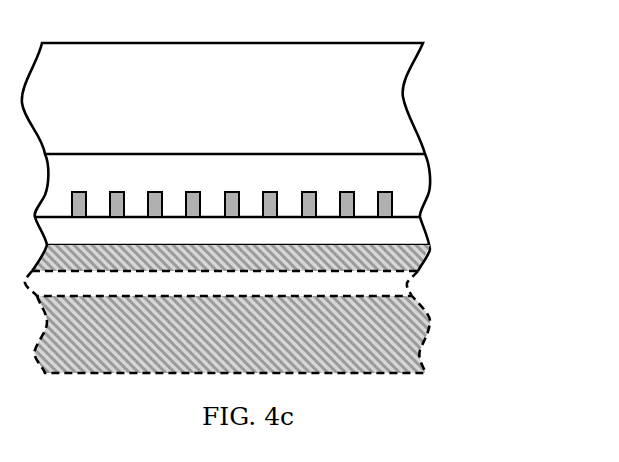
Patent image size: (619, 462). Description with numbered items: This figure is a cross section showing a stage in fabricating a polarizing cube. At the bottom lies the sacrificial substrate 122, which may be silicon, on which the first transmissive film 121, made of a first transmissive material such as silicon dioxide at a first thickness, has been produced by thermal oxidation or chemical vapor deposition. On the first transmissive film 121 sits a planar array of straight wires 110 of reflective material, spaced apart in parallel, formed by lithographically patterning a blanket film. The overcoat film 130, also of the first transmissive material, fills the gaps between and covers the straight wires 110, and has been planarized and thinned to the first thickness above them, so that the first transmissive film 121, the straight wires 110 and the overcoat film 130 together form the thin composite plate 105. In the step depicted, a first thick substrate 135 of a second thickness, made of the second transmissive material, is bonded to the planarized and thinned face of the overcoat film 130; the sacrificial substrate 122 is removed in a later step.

The first thick substrate 135 is at (387, 71).
The overcoat film 130 is at (413, 162).
The straight wires 110 is at (392, 199).
The first transmissive film 121 is at (413, 237).
The sacrificial substrate 122 is at (413, 258).
The thin composite plate 105 is at (558, 152).